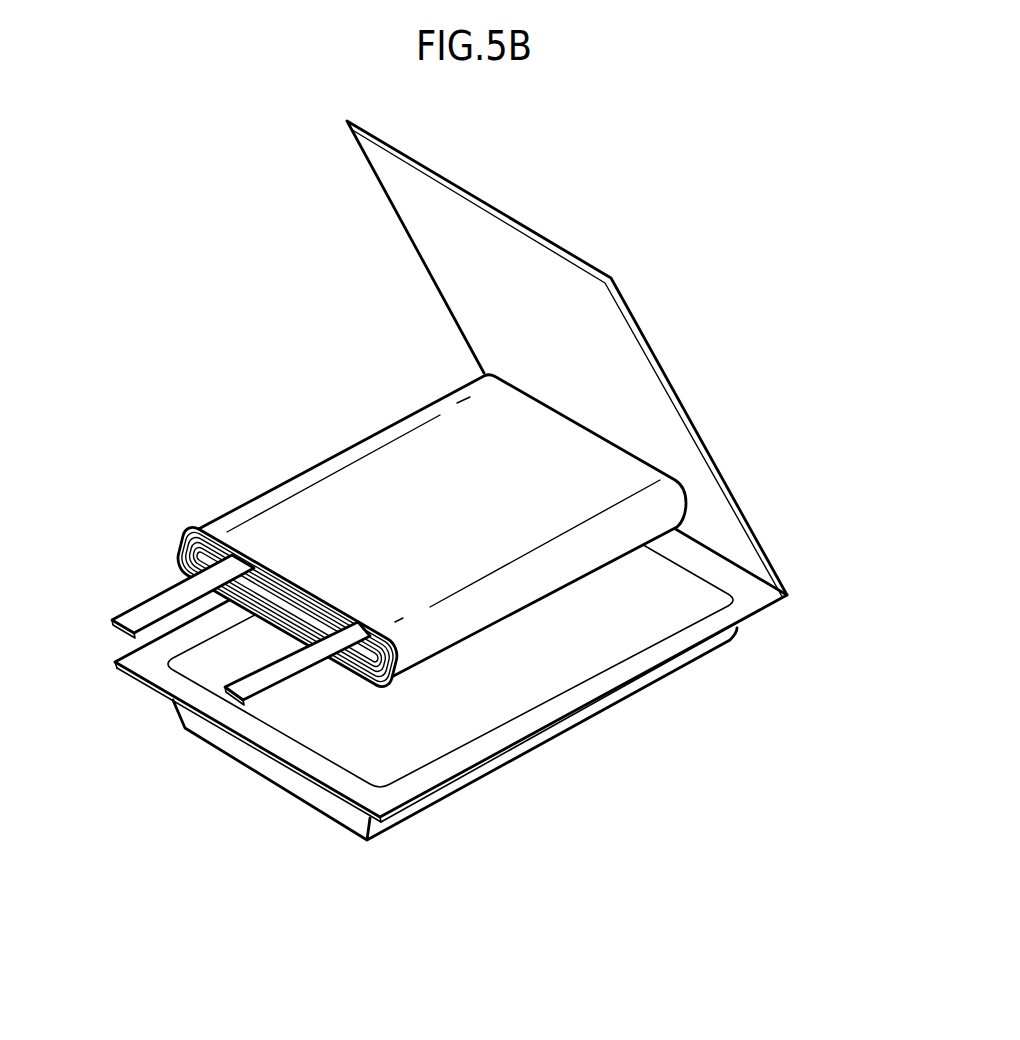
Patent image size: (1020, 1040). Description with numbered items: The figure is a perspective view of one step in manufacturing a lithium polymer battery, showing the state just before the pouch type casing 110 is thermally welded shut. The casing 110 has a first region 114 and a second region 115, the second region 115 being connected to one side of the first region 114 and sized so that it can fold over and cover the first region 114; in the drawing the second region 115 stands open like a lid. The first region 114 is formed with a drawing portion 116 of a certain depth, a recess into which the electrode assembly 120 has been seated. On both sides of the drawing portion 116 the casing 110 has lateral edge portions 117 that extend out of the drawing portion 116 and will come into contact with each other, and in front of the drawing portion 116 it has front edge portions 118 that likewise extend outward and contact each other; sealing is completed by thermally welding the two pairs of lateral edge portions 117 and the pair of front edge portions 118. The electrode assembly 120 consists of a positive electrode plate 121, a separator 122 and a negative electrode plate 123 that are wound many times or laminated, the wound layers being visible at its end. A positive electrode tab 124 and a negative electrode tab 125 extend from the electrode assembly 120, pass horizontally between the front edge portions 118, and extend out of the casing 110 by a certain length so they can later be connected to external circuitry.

The casing 110 is at (514, 500).
The first region 114 is at (453, 659).
The second region 115 is at (357, 195).
The drawing portion 116 is at (487, 703).
The lateral edge portions 117 is at (630, 670).
The front edge portions 118 is at (310, 763).
The electrode assembly 120 is at (355, 573).
The positive electrode plate 121 is at (187, 570).
The separator 122 is at (193, 535).
The negative electrode plate 123 is at (190, 572).
The positive electrode tab 124 is at (130, 603).
The negative electrode tab 125 is at (232, 690).